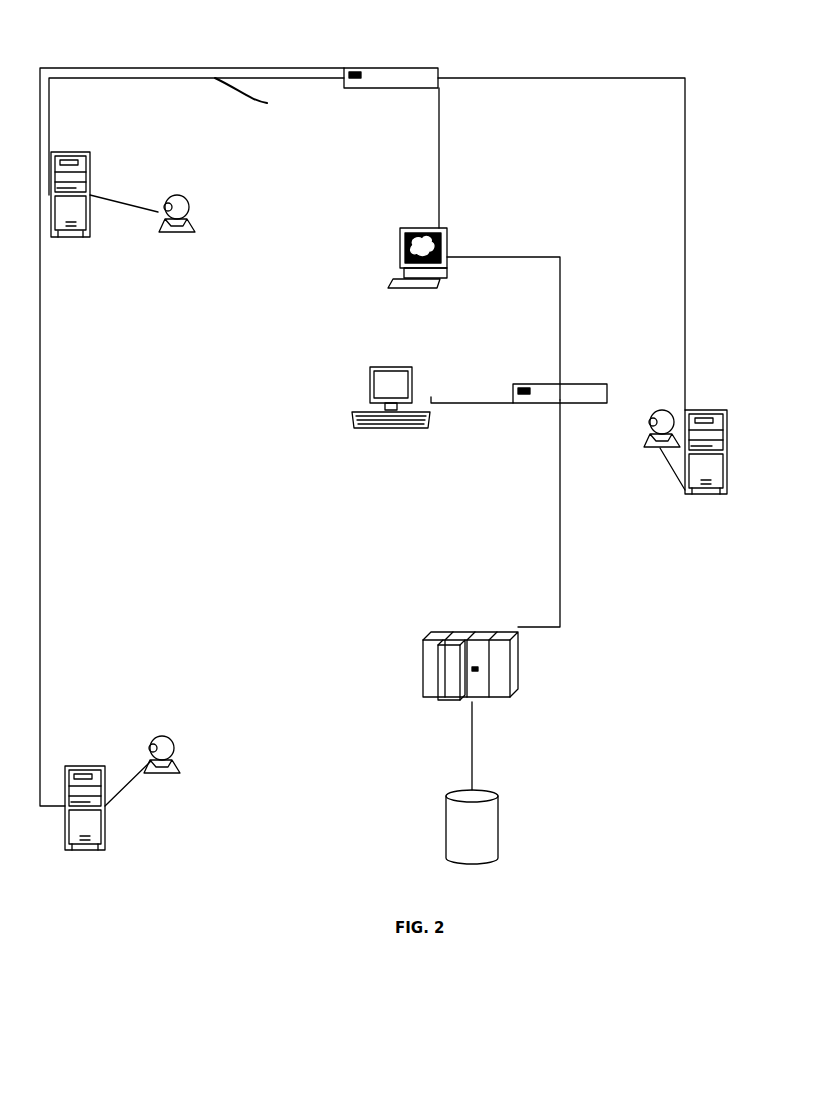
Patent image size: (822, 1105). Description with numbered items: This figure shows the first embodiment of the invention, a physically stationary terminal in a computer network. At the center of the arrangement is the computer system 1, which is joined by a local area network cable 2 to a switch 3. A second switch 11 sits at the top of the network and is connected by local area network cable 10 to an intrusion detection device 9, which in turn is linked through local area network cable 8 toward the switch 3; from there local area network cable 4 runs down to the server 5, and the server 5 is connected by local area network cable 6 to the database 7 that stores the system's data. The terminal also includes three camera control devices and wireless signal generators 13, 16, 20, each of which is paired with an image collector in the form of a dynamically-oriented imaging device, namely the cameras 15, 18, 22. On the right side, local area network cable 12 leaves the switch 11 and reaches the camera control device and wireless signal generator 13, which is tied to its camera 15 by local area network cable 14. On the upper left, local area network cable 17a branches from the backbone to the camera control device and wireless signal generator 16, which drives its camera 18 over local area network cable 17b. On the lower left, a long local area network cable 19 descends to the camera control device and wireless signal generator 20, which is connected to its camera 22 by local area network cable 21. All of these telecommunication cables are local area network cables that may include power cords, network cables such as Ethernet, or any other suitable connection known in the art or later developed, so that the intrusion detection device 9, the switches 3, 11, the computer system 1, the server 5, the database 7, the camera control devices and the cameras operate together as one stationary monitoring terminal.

The computer system 1 is at (390, 367).
The local area network cable 2 is at (470, 403).
The switch 3 is at (590, 384).
The local area network cable 4 is at (560, 514).
The server 5 is at (455, 636).
The local area network cable 6 is at (472, 743).
The database 7 is at (500, 796).
The local area network cable 8 is at (535, 257).
The intrusion detection device 9 is at (420, 228).
The local area network cable 10 is at (439, 163).
The switch 11 is at (391, 68).
The local area network cable 12 is at (537, 78).
The camera control device and wireless signal generator 13 is at (690, 410).
The local area network cable 14 is at (683, 490).
The camera 15 is at (660, 410).
The camera control device and wireless signal generator 16 is at (70, 152).
The local area network cable 17a is at (262, 102).
The local area network cable 17b is at (133, 208).
The camera 18 is at (188, 200).
The local area network cable 19 is at (41, 527).
The camera control device and wireless signal generator 20 is at (85, 766).
The local area network cable 21 is at (123, 785).
The camera 22 is at (175, 740).